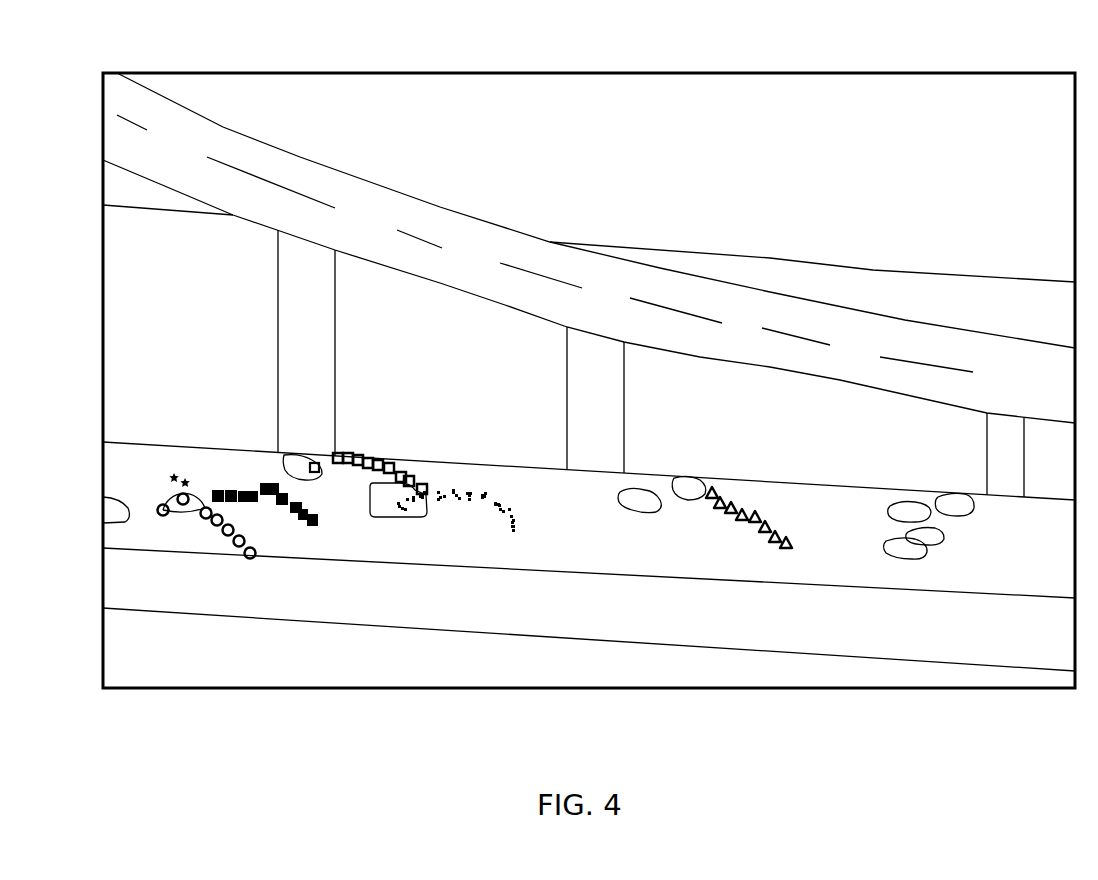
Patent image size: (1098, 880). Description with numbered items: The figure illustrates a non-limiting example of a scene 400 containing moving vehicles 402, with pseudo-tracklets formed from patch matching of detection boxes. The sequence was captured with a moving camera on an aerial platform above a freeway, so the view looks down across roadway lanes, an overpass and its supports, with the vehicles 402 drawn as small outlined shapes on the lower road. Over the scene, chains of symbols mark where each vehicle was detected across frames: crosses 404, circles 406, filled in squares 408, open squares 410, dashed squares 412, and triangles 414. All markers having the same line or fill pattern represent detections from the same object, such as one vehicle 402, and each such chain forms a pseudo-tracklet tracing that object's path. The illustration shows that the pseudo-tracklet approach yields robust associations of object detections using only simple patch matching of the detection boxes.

The scene 400 is at (85, 28).
The moving vehicles 402 is at (645, 492).
The crosses 404 is at (172, 476).
The circles 406 is at (253, 556).
The filled in squares 408 is at (258, 487).
The open squares 410 is at (392, 460).
The dashed squares 412 is at (487, 502).
The triangles 414 is at (760, 516).